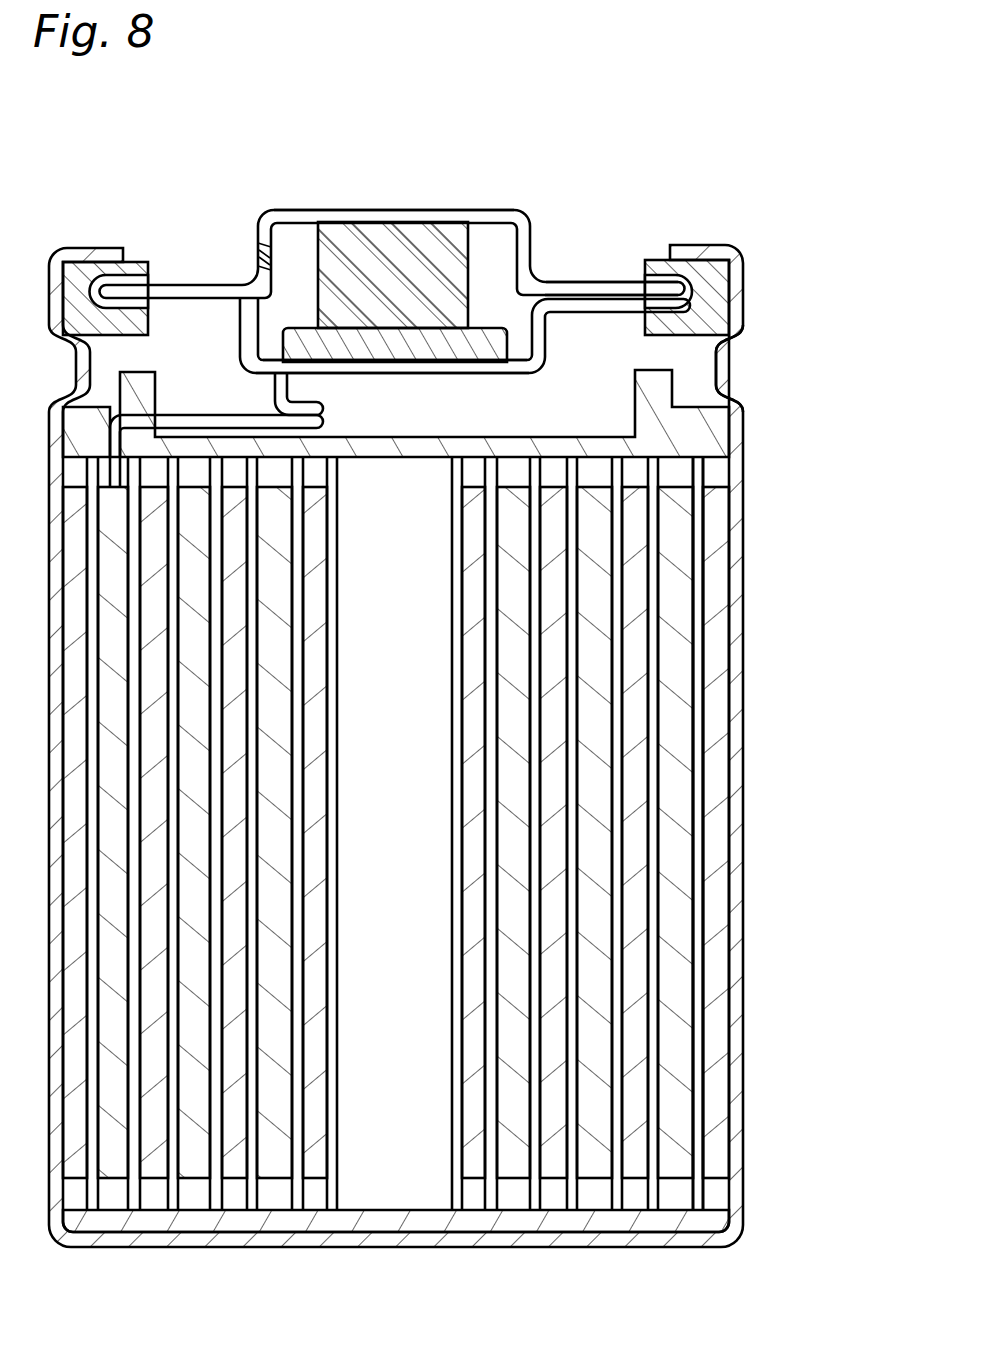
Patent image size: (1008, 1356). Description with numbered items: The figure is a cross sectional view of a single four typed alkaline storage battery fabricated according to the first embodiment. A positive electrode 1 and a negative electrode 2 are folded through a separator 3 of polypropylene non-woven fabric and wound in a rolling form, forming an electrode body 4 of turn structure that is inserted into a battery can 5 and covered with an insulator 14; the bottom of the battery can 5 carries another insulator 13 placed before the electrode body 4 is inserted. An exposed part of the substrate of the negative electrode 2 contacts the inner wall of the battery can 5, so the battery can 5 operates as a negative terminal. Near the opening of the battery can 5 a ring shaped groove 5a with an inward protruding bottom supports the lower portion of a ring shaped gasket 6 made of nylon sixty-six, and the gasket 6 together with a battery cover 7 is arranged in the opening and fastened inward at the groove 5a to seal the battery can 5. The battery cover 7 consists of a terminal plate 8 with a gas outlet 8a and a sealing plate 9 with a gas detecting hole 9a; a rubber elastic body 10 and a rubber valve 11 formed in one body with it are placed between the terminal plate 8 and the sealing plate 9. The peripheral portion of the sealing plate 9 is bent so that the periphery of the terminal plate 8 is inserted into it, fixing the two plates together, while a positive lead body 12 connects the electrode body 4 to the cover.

The positive electrode 1 is at (680, 636).
The negative electrode 2 is at (717, 720).
The separator 3 is at (847, 637).
The electrode body of turn structure 4 is at (486, 833).
The battery can 5 is at (745, 955).
The ring shaped groove 5a is at (709, 365).
The ring shaped gasket 6 is at (722, 276).
The battery cover 7 is at (443, 185).
The terminal plate 8 is at (503, 209).
The gas outlet 8a is at (262, 258).
The sealing plate 9 is at (587, 297).
The gas detecting hole 9a is at (387, 375).
The rubber elastic body 10 is at (362, 237).
The rubber valve 11 is at (530, 367).
The positive lead body 12 is at (220, 413).
The insulator 13 is at (421, 1230).
The insulator 14 is at (713, 423).